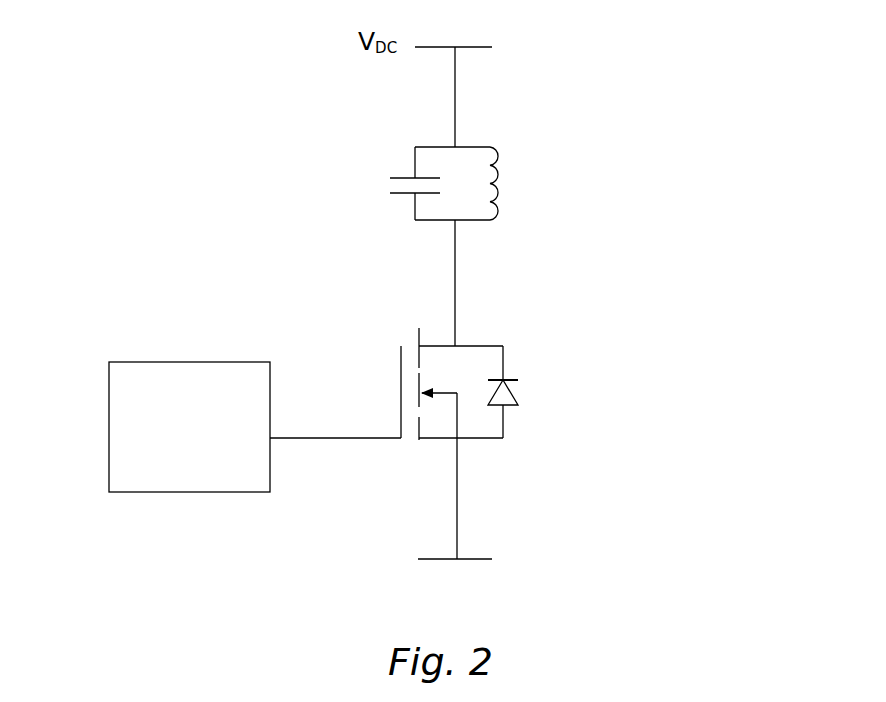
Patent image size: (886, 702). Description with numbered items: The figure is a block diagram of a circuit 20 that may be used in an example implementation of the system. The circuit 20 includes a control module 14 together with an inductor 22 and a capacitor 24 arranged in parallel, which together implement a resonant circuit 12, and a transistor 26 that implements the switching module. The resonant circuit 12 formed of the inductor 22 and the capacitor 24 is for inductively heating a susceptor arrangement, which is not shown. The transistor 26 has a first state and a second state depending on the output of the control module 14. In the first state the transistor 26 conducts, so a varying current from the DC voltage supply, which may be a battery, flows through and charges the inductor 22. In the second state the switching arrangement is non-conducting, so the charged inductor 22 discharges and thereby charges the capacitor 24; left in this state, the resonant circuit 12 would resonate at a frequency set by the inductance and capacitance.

The resonant circuit 12 is at (548, 248).
The control module 14 is at (109, 472).
The circuit 20 is at (727, 538).
The inductor 22 is at (503, 163).
The capacitor 24 is at (403, 197).
The transistor 26 is at (427, 440).